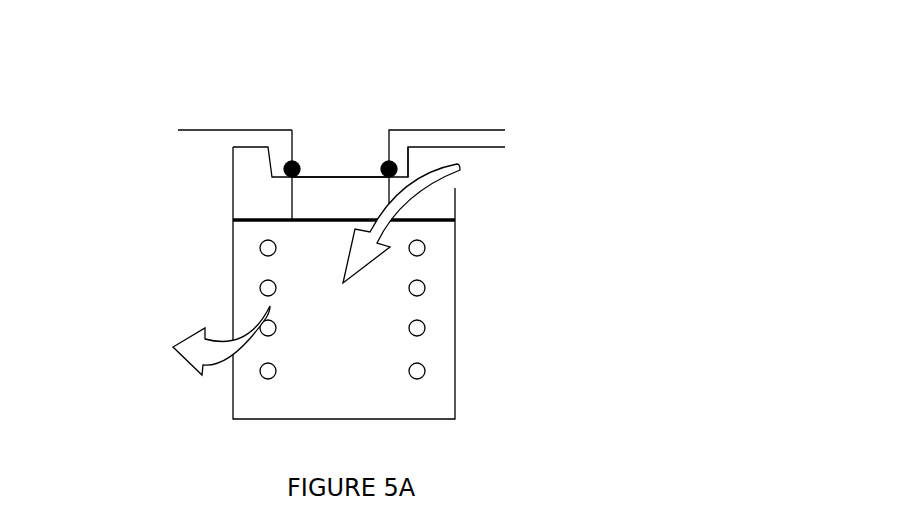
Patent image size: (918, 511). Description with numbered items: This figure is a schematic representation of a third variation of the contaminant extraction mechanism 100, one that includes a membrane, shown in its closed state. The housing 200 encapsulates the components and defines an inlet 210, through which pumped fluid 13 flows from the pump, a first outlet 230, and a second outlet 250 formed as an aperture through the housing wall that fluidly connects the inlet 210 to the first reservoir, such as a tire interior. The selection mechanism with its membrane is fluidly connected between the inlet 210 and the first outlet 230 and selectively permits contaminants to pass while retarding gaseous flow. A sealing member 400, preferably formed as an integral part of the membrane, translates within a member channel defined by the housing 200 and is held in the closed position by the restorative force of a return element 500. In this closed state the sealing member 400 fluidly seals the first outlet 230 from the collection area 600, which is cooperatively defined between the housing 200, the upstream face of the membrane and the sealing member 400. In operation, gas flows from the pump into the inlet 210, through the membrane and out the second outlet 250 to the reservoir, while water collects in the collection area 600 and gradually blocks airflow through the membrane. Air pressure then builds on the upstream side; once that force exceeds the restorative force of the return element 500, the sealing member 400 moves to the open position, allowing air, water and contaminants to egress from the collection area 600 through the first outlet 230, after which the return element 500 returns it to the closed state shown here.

The contaminant extraction mechanism 100 is at (272, 93).
The housing 200 is at (218, 155).
The sealing member 400 is at (288, 194).
The return element 500 is at (262, 288).
The second outlet 250 is at (232, 352).
The first outlet 230 is at (355, 137).
The inlet 210 is at (483, 160).
The pumped fluid 13 is at (442, 177).
The collection area 600 is at (430, 217).